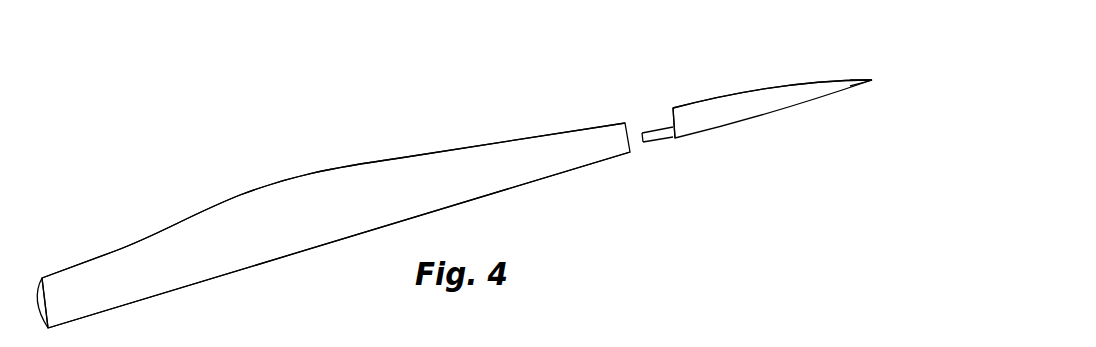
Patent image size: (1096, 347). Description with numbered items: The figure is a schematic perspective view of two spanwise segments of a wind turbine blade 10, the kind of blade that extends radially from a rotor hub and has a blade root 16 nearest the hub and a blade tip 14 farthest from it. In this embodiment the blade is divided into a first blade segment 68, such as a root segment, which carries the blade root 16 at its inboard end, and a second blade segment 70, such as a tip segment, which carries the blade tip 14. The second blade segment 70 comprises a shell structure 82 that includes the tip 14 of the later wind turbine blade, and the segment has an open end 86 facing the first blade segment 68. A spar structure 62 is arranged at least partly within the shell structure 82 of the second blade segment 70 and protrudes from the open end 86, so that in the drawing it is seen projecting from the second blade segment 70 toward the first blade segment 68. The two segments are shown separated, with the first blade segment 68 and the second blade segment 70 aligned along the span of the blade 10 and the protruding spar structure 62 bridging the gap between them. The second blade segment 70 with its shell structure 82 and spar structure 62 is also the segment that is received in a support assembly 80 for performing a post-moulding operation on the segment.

The wind turbine blade 10 is at (588, 101).
The blade tip 14 is at (863, 78).
The blade root 16 is at (43, 278).
The spar structure 62 is at (660, 138).
The first blade segment 68 is at (428, 175).
The second blade segment 70 is at (756, 128).
The support assembly 80 is at (339, 249).
The shell structure 82 is at (775, 100).
The open end 86 is at (675, 122).